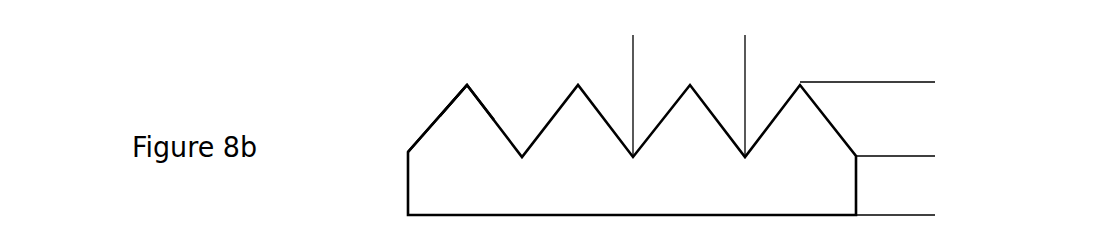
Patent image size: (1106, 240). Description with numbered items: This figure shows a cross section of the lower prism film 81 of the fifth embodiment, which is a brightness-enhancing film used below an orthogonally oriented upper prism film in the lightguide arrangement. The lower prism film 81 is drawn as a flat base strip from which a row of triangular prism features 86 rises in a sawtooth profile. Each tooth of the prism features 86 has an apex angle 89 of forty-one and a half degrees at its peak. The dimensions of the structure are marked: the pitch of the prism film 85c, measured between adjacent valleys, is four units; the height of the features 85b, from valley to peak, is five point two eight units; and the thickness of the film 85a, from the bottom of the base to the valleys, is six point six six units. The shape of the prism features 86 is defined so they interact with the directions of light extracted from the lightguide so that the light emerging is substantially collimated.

The lower prism film 81 is at (1008, 52).
The prism features 86 is at (425, 130).
The apex angle 89 is at (468, 98).
The pitch of the prism film 85c is at (745, 35).
The height of the features 85b is at (935, 82).
The thickness of the film 85a is at (935, 156).